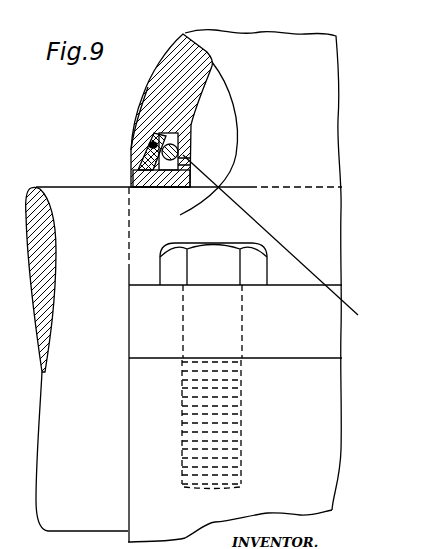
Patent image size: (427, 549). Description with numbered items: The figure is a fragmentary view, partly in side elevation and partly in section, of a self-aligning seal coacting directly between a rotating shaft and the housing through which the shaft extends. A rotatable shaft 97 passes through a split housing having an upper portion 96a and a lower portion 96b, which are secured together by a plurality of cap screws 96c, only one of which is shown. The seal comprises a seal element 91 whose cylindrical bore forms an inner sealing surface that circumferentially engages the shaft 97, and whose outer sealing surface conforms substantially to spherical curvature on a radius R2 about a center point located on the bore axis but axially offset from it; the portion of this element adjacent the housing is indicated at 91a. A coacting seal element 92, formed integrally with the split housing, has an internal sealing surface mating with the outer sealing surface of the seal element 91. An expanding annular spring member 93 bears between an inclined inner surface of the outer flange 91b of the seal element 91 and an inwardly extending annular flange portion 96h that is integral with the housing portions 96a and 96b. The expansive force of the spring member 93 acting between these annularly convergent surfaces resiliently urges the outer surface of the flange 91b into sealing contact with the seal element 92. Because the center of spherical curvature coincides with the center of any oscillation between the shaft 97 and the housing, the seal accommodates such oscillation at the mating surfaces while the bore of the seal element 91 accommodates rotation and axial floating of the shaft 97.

The seal element 91 is at (128, 175).
The block base portion 91a is at (166, 186).
The outer flange 91b is at (140, 150).
The coacting seal element 92 is at (140, 128).
The expanding annular spring member 93 is at (180, 148).
The upper housing portion 96a is at (158, 89).
The lower housing portion 96b is at (128, 536).
The cap screw 96c is at (192, 266).
The inwardly extending annular flange portion 96h is at (190, 160).
The rotatable shaft 97 is at (58, 192).
The radius of spherical curvature R2 is at (250, 224).